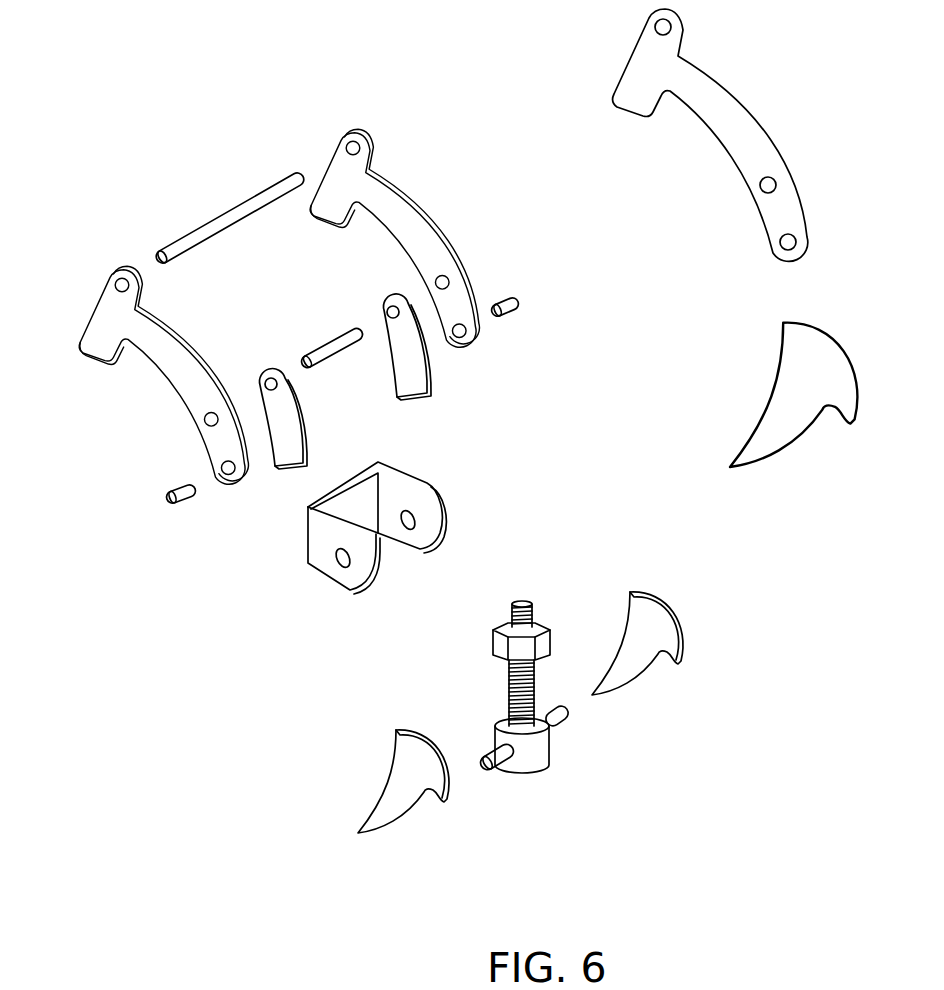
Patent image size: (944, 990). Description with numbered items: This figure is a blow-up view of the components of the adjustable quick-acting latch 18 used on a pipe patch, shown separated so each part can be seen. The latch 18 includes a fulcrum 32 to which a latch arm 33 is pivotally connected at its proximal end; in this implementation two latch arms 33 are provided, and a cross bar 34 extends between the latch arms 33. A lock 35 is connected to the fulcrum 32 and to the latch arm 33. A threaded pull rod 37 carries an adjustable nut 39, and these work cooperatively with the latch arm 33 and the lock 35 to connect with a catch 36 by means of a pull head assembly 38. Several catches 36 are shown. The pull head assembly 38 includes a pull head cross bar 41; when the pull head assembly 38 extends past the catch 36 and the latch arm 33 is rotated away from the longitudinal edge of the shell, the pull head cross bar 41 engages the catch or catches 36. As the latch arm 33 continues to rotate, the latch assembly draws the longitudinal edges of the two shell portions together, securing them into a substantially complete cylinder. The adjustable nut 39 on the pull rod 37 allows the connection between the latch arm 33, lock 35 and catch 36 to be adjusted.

The adjustable quick-acting latch 18 is at (402, 142).
The fulcrum 32 is at (422, 483).
The latch arm 33 is at (723, 100).
The cross bar 34 is at (243, 200).
The lock 35 is at (312, 453).
The catch 36 is at (757, 410).
The threaded pull rod 37 is at (533, 687).
The pull head assembly 38 is at (517, 765).
The adjustable nut 39 is at (493, 643).
The pull head cross bar 41 is at (562, 730).